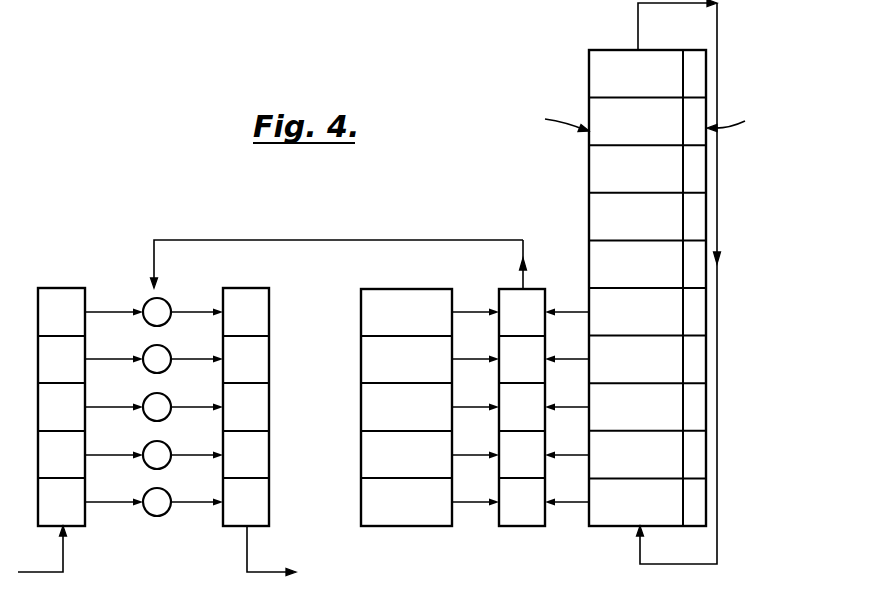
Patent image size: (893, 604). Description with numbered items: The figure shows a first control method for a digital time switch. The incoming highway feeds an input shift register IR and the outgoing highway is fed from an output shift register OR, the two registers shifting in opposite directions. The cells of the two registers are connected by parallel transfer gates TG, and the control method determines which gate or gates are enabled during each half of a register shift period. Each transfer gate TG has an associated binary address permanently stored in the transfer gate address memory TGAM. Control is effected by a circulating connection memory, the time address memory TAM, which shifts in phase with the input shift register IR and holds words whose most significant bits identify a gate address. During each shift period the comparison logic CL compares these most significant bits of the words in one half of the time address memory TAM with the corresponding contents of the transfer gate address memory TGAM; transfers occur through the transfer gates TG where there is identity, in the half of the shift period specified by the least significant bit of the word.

The input shift register IR is at (51, 417).
The output shift register OR is at (259, 419).
The transfer gates TG is at (304, 392).
The transfer gate address memory TGAM is at (430, 394).
The comparison logic CL is at (544, 397).
The time address memory TAM is at (620, 282).